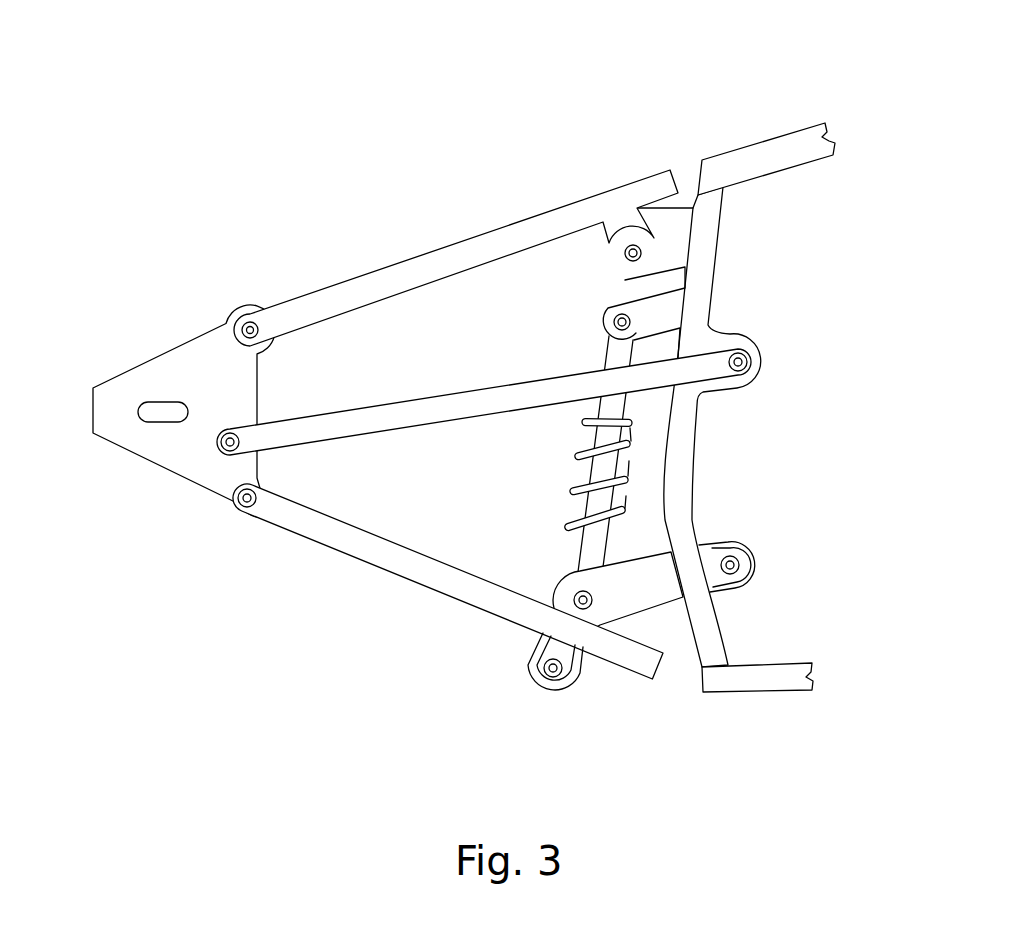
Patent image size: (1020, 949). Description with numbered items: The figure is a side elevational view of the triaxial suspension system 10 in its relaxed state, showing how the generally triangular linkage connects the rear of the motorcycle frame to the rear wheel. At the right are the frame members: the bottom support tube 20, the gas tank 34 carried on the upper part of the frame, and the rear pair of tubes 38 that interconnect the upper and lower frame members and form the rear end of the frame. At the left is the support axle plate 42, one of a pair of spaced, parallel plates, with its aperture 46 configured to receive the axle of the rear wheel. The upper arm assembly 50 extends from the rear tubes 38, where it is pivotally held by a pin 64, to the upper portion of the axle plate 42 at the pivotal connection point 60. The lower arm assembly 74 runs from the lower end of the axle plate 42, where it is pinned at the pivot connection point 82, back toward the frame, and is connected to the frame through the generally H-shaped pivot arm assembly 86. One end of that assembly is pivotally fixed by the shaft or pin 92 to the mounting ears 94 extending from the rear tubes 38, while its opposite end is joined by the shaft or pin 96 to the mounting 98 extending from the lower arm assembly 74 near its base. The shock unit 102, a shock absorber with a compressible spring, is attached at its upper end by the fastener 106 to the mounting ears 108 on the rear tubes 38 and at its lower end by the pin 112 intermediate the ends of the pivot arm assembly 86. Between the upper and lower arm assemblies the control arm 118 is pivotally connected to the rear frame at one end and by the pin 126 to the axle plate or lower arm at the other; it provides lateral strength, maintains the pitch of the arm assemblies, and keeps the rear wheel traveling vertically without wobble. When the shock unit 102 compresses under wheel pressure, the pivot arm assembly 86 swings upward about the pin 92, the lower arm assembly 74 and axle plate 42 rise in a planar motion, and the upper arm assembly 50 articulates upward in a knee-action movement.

The triaxial suspension system 10 is at (333, 115).
The bottom support tube 20 is at (798, 688).
The gas tank 34 is at (777, 142).
The rear pair of tubes 38 is at (680, 453).
The support axle plate 42 is at (127, 438).
The aperture 46 is at (150, 405).
The upper arm assembly 50 is at (425, 255).
The pivotal connection point 60 is at (243, 327).
The pin 64 is at (622, 248).
The lower arm assembly 74 is at (390, 570).
The pivot connection point 82 is at (237, 510).
The pivot arm assembly 86 is at (649, 603).
The shaft or pin 92 is at (733, 574).
The mounting ears 94 is at (727, 567).
The shaft or pin 96 is at (551, 675).
The mounting 98 is at (555, 661).
The shock unit 102 is at (584, 438).
The fastener 106 is at (573, 304).
The mounting ears 108 is at (618, 319).
The pin 112 is at (580, 597).
The control arm 118 is at (405, 413).
The pin 126 is at (223, 450).